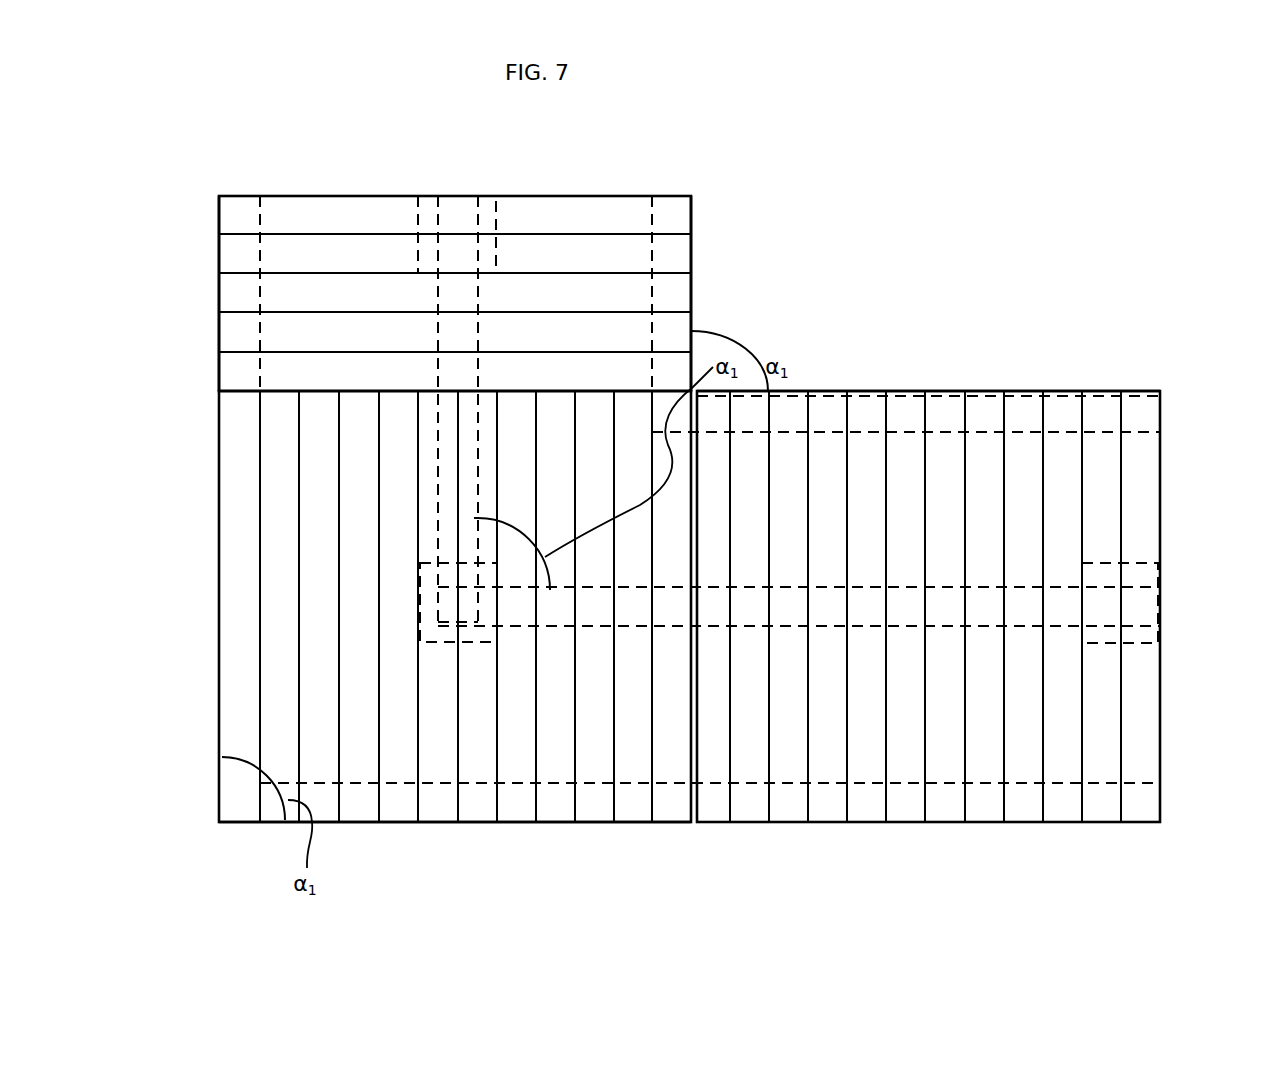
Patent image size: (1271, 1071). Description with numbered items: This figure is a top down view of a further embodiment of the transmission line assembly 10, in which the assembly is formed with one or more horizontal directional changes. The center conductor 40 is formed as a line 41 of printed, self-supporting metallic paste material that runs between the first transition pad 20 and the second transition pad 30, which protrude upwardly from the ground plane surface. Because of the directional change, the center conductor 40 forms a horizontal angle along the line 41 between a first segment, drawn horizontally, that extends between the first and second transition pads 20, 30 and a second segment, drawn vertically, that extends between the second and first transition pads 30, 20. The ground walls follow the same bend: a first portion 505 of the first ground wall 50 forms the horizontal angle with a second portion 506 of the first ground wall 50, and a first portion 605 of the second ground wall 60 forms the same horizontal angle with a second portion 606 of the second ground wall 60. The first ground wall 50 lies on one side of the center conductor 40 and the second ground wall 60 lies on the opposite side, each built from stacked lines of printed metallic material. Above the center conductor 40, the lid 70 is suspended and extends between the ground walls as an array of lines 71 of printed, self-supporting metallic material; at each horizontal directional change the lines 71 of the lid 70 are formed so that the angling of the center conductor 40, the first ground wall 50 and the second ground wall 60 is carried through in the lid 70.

The transmission line assembly 10 is at (1028, 284).
The first transition pad 20 is at (497, 219).
The second transition pad 30 is at (443, 640).
The center conductor 40 is at (480, 333).
The line 41 is at (456, 295).
The first ground wall 50 is at (691, 196).
The second ground wall 60 is at (222, 196).
The lid 70 is at (621, 215).
The lines 71 is at (905, 453).
The first portion 505 is at (691, 247).
The second portion 506 is at (1143, 391).
The first portion 605 is at (221, 208).
The second portion 606 is at (445, 822).